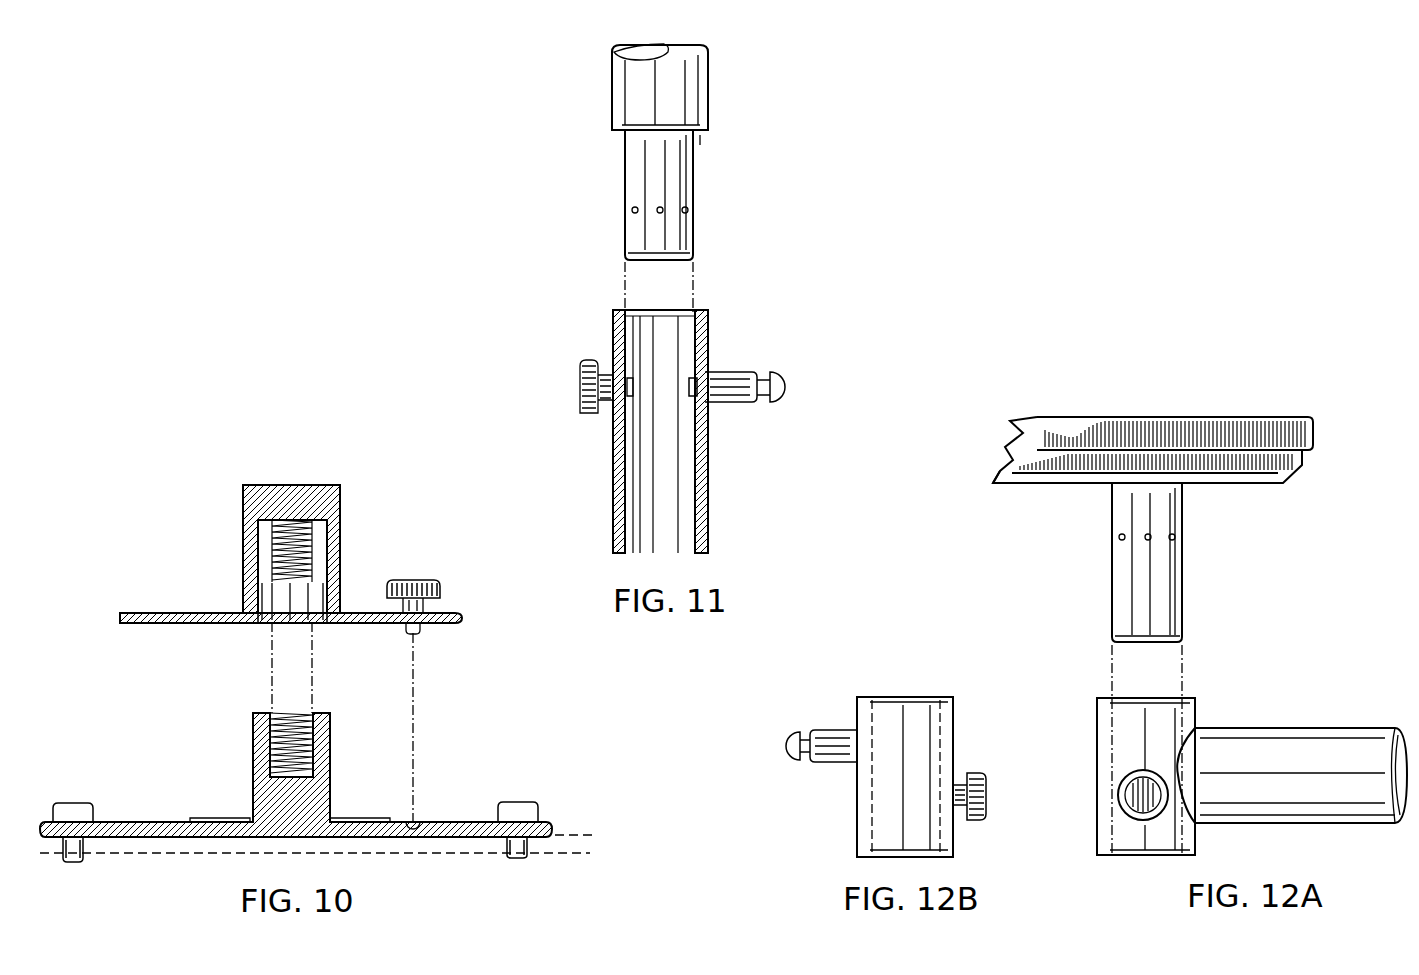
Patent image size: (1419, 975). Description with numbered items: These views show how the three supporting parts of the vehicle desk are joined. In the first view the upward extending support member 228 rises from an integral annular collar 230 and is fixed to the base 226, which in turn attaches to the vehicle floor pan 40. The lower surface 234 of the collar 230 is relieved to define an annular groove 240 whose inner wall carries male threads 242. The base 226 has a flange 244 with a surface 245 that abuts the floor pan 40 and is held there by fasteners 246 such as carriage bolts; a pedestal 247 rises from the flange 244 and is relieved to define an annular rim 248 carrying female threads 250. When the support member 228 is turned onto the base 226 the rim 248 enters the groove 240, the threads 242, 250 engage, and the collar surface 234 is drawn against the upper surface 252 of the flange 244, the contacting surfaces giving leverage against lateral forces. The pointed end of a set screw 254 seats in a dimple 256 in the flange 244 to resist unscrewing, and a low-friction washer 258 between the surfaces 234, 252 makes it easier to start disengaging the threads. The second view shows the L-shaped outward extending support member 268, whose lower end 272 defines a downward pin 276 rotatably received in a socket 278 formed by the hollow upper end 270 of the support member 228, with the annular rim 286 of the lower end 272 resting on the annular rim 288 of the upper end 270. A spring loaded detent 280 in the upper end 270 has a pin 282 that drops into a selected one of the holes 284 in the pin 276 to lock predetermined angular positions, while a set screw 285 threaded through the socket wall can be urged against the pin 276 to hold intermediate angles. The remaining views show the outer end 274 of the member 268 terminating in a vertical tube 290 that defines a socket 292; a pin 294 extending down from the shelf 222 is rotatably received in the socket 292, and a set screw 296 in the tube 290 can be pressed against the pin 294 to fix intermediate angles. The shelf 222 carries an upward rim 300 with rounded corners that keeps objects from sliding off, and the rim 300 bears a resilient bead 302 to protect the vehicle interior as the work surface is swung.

In FIG. 10, the floor pan 40 is at (560, 856).
In FIG. 12A, the shelf 222 is at (1108, 408).
In FIG. 10, the base 226 is at (152, 745).
In FIG. 10, the upward extending support member 228 is at (214, 521).
In FIG. 11, the upward extending support member 228 is at (576, 345).
In FIG. 10, the annular collar 230 is at (145, 613).
In FIG. 10, the lower surface 234 is at (152, 623).
In FIG. 10, the annular groove 240 is at (308, 590).
In FIG. 10, the male threads 242 is at (272, 590).
In FIG. 10, the flange 244 is at (128, 820).
In FIG. 10, the surface 245 is at (447, 840).
In FIG. 10, the fasteners 246 is at (540, 805).
In FIG. 10, the pedestal 247 is at (332, 790).
In FIG. 10, the annular rim 248 is at (330, 716).
In FIG. 10, the female threads 250 is at (282, 715).
In FIG. 10, the upper surface 252 is at (508, 806).
In FIG. 10, the set screw 254 is at (423, 580).
In FIG. 10, the dimple 256 is at (412, 818).
In FIG. 10, the washer 258 is at (212, 818).
In FIG. 11, the outward extending support member 268 is at (577, 100).
In FIG. 12A, the outward extending support member 268 is at (1325, 711).
In FIG. 11, the upper end 270 is at (715, 320).
In FIG. 11, the lower end 272 is at (608, 127).
In FIG. 12A, the outer end 274 is at (1255, 735).
In FIG. 11, the pin 276 is at (635, 180).
In FIG. 11, the socket 278 is at (681, 313).
In FIG. 11, the spring loaded detent 280 is at (770, 369).
In FIG. 11, the pin 282 is at (691, 398).
In FIG. 11, the holes 284 is at (683, 224).
In FIG. 11, the set screw 285 is at (577, 393).
In FIG. 11, the annular rim 286 is at (703, 138).
In FIG. 11, the annular rim 288 is at (618, 299).
In FIG. 12A, the tube 290 is at (1196, 712).
In FIG. 12B, the tube 290 is at (945, 718).
In FIG. 12A, the socket 292 is at (1120, 706).
In FIG. 12B, the socket 292 is at (885, 722).
In FIG. 12A, the pin 294 is at (1165, 598).
In FIG. 12B, the pin 294 is at (787, 764).
In FIG. 12A, the set screw 296 is at (1172, 552).
In FIG. 12B, the set screw 296 is at (988, 805).
In FIG. 12A, the rim 300 is at (1020, 458).
In FIG. 12A, the bead 302 is at (1315, 428).